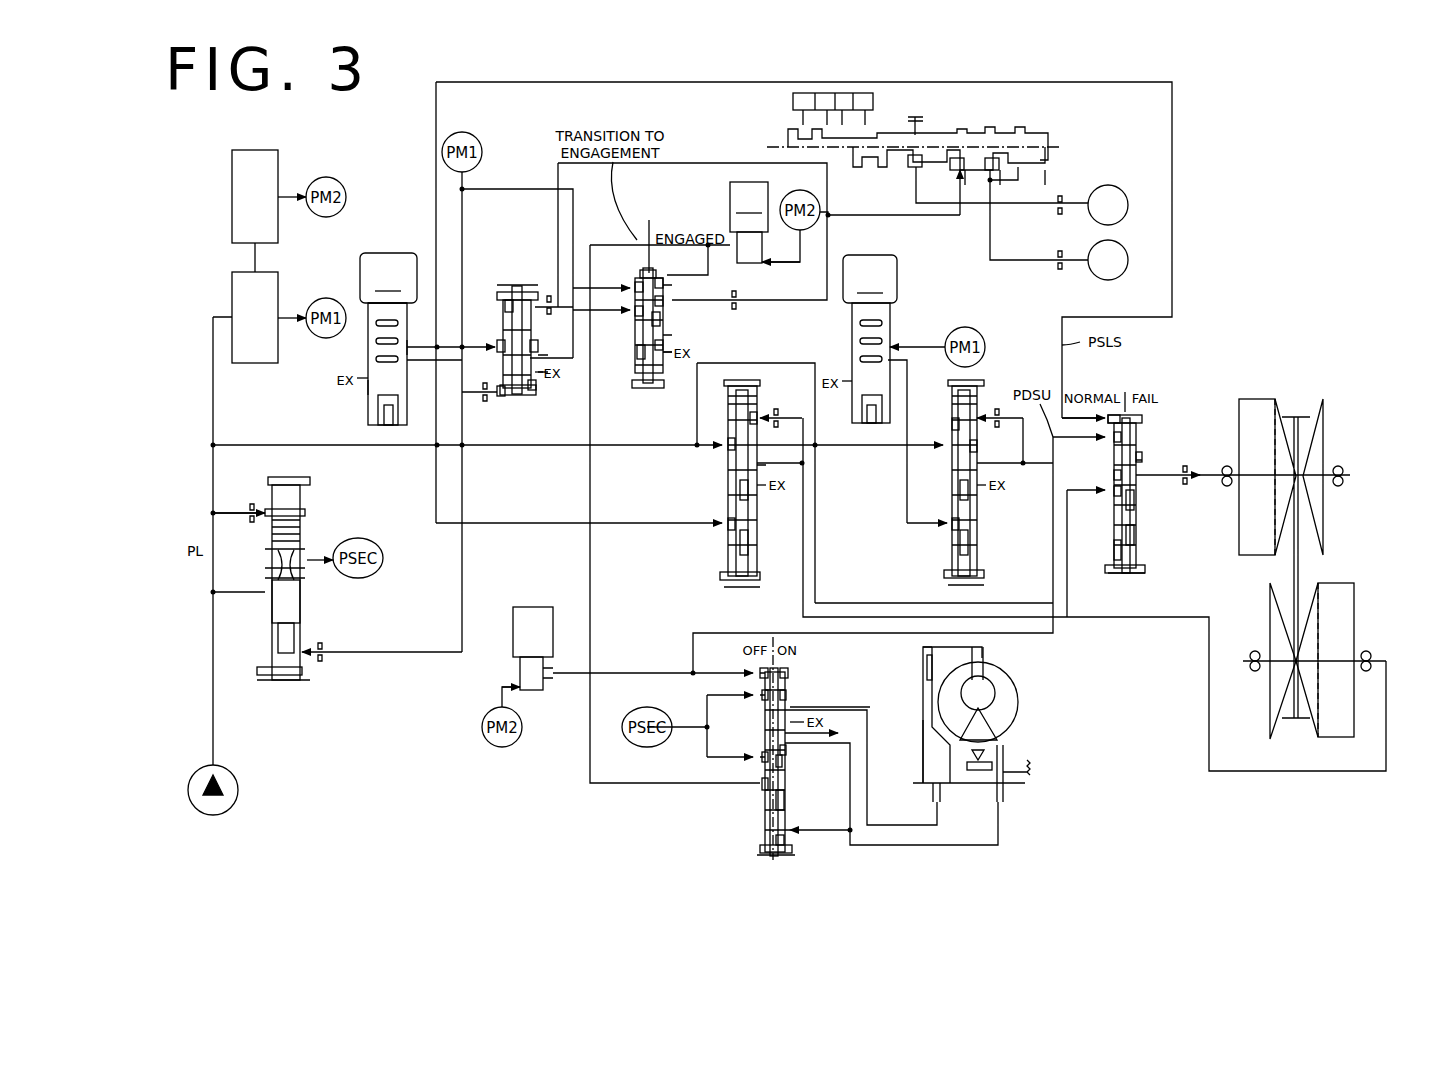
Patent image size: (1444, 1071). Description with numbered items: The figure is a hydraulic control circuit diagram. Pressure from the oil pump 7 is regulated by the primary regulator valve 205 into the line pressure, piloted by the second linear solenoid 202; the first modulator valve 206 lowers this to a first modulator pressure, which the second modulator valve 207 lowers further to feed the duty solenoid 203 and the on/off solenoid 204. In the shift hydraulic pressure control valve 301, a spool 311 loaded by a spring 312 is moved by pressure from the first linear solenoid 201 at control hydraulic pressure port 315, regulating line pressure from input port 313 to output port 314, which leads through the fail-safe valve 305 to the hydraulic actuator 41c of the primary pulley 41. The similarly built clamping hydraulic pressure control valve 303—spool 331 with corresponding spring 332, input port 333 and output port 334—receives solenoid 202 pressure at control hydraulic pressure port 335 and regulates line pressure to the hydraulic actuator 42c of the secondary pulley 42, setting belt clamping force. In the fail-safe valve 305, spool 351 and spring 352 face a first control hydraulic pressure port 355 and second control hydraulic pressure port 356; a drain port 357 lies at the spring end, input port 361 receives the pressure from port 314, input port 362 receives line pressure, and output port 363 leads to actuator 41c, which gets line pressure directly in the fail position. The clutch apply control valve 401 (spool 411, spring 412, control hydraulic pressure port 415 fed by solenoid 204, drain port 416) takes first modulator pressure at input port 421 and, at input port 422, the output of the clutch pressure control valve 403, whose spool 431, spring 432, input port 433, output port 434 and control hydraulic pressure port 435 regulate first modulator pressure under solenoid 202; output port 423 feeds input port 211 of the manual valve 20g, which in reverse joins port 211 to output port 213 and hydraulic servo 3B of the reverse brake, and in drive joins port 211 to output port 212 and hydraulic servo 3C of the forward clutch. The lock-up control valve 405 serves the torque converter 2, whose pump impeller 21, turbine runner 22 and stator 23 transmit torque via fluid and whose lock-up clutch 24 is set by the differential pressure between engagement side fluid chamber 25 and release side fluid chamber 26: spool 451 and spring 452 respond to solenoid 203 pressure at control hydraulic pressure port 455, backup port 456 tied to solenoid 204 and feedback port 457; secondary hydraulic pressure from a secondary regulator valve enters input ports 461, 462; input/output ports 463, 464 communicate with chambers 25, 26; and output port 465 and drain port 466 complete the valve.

The torque converter 2 is at (974, 746).
The oil pump 7 is at (240, 786).
The manual valve 20g is at (1033, 130).
The pump impeller 21 is at (1018, 688).
The turbine runner 22 is at (983, 655).
The stator 23 is at (990, 724).
The lock-up clutch 24 is at (927, 668).
The engagement side fluid chamber 25 is at (925, 645).
The release side fluid chamber 26 is at (923, 758).
The hydraulic servo 3B is at (1118, 188).
The hydraulic servo 3C is at (1125, 252).
The primary pulley 41 is at (1330, 400).
The hydraulic actuator 41c is at (1257, 399).
The secondary pulley 42 is at (1350, 580).
The hydraulic actuator 42c is at (1340, 600).
The linear solenoid (SLP) 201 is at (902, 273).
The linear solenoid (SLS) 202 is at (382, 250).
The duty solenoid (DSU) 203 is at (533, 606).
The on/off solenoid (SL1) 204 is at (728, 192).
The primary regulator valve 205 is at (290, 685).
The first modulator valve 206 is at (232, 288).
The second modulator valve 207 is at (232, 170).
The input port 211 is at (955, 165).
The output port 212 is at (993, 170).
The output port 213 is at (910, 165).
The shift hydraulic pressure control valve 301 is at (970, 580).
The clamping hydraulic pressure control valve 303 is at (742, 590).
The fail-safe valve 305 is at (1130, 575).
The spool 311 is at (970, 492).
The spring 312 is at (975, 540).
The input port 313 is at (952, 432).
The output port 314 is at (977, 448).
The control hydraulic pressure port 315 is at (952, 530).
The spool 331 is at (748, 492).
The spring 332 is at (750, 540).
The input port 333 is at (728, 446).
The output port 334 is at (757, 424).
The control hydraulic pressure port 335 is at (728, 528).
The spool 351 is at (1134, 498).
The spring 352 is at (1114, 545).
The first control hydraulic pressure port 355 is at (1120, 418).
The second control hydraulic pressure port 356 is at (1114, 442).
The drain port 357 is at (1134, 530).
The input port 361 is at (1114, 474).
The input port 362 is at (1114, 492).
The output port 363 is at (1138, 468).
The clutch apply control valve 401 is at (648, 388).
The clutch pressure control valve 403 is at (522, 285).
The lock-up control valve 405 is at (765, 853).
The spool 411 is at (663, 320).
The spring 412 is at (640, 350).
The control hydraulic pressure port 415 is at (661, 280).
The drain port 416 is at (668, 342).
The input port 421 is at (636, 287).
The input port 422 is at (637, 312).
The output port 423 is at (663, 300).
The spool 431 is at (532, 388).
The spring 432 is at (505, 306).
The input port 433 is at (497, 347).
The output port 434 is at (535, 355).
The control hydraulic pressure port 435 is at (503, 397).
The spool 451 is at (788, 680).
The spring 452 is at (784, 795).
The control hydraulic pressure port 455 is at (760, 670).
The backup port 456 is at (762, 785).
The feedback port 457 is at (790, 840).
The input port 461 is at (762, 760).
The input port 462 is at (762, 700).
The input/output port 463 is at (782, 758).
The input/output port 464 is at (786, 697).
The output port 465 is at (786, 748).
The drain port 466 is at (870, 712).